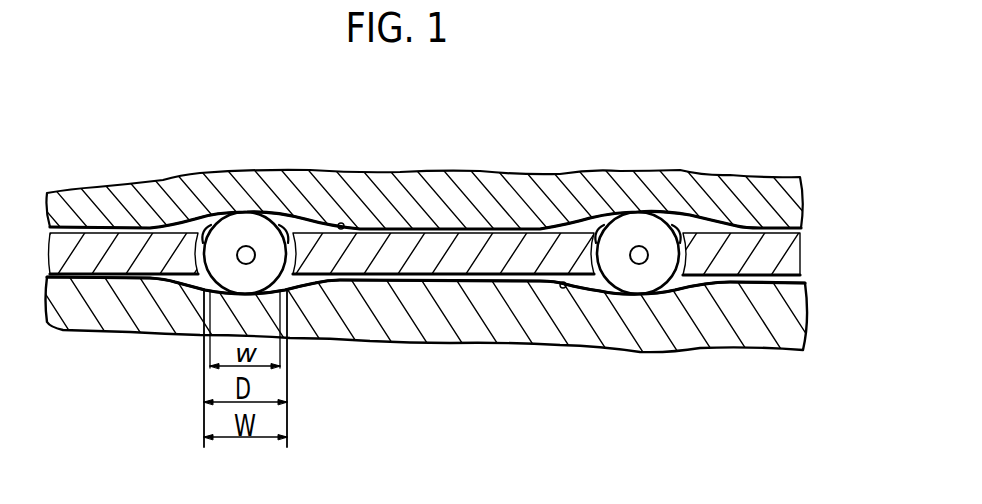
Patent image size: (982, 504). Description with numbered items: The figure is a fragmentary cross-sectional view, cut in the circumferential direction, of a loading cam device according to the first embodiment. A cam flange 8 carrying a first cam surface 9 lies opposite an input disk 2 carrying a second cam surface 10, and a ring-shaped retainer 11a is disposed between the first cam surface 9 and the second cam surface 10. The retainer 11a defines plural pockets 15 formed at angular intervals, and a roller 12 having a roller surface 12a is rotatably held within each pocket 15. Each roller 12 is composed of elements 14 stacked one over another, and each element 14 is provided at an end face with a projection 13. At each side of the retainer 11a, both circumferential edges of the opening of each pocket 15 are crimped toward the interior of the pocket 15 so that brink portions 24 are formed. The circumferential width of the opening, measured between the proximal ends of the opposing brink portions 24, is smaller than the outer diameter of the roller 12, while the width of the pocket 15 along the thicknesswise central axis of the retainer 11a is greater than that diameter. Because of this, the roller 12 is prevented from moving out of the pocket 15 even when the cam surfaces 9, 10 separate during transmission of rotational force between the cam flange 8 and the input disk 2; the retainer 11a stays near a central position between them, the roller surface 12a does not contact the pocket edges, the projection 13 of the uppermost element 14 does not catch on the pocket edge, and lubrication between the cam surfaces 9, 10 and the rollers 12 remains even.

The input disk 2 is at (780, 313).
The cam flange 8 is at (750, 197).
The first cam surface 9 is at (341, 223).
The second cam surface 10 is at (563, 288).
The retainer 11a is at (783, 252).
The roller 12 is at (241, 247).
The roller surface 12a is at (205, 226).
The projection 13 is at (212, 223).
The element 14 is at (257, 228).
The pocket 15 is at (280, 224).
The brink portion 24 is at (143, 202).